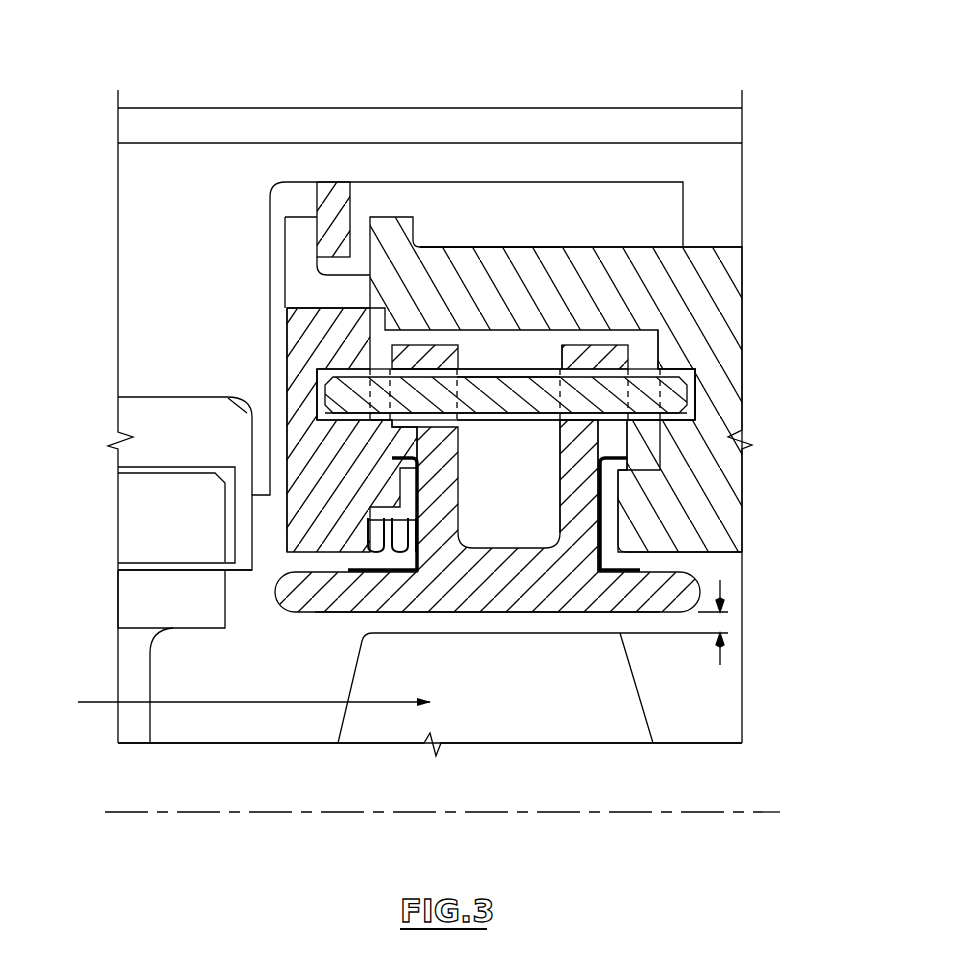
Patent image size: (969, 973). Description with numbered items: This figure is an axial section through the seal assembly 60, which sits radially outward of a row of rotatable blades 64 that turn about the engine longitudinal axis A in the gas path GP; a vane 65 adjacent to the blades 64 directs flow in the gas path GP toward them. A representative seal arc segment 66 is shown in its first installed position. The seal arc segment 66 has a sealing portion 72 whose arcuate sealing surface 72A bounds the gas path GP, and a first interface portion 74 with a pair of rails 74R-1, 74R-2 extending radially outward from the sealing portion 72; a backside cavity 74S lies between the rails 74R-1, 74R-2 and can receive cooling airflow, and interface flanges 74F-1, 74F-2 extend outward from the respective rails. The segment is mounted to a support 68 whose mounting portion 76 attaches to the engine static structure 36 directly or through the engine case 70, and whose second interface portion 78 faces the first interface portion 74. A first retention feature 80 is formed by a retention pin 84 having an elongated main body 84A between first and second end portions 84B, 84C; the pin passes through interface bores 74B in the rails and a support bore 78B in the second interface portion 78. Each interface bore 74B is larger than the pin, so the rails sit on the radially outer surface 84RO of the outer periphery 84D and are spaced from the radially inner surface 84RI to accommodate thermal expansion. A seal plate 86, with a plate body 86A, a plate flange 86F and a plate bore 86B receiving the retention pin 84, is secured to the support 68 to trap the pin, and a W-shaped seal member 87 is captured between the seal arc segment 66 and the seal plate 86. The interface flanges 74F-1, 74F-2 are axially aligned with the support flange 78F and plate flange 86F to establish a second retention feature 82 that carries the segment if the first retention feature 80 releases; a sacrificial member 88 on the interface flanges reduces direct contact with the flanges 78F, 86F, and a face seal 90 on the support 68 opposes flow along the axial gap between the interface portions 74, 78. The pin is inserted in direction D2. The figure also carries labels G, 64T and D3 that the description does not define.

The seal assembly 60 is at (130, 72).
The engine static structure 36 is at (621, 104).
The engine case 70 is at (698, 140).
The support 68 is at (719, 244).
The first interface portion 74 is at (698, 330).
The rail 74R-1 is at (445, 343).
The rail 74R-2 is at (585, 343).
The interface bore 74B is at (410, 343).
The mounting portion 76 is at (497, 262).
The backside cavity 74S is at (557, 365).
The seal arc segment 66 is at (601, 335).
The radially outer surface 84RO is at (640, 345).
The first retention feature 80 is at (708, 372).
The support bore 78B is at (703, 378).
The retention pin 84 is at (702, 392).
The second interface portion 78 is at (705, 398).
The first end portion 84B is at (722, 395).
The interface flange 74F-1 is at (640, 448).
The second retention feature 82 is at (686, 452).
The sacrificial member 88 is at (428, 481).
The seal plate 86 is at (299, 300).
The plate bore 86B is at (360, 380).
The plate body 86A is at (305, 360).
The second end portion 84C is at (325, 395).
The outer periphery 84D is at (456, 363).
The elongated main body 84A is at (477, 380).
The interface flange 74F-2 is at (390, 458).
The radially inner surface 84RI is at (597, 425).
The support flange 78F is at (598, 493).
The plate flange 86F is at (402, 490).
The seal member 87 is at (408, 560).
The sealing portion 72 is at (700, 574).
The sealing surface 72A is at (648, 614).
The gap G is at (722, 588).
The rotatable blades 64 is at (658, 724).
The shaft tab 64T is at (365, 630).
The vane 65 is at (165, 720).
The face seal 90 is at (590, 548).
The gas path GP is at (225, 700).
The engine longitudinal axis A is at (770, 812).
The third direction D3 is at (250, 343).
The direction D2 is at (250, 385).